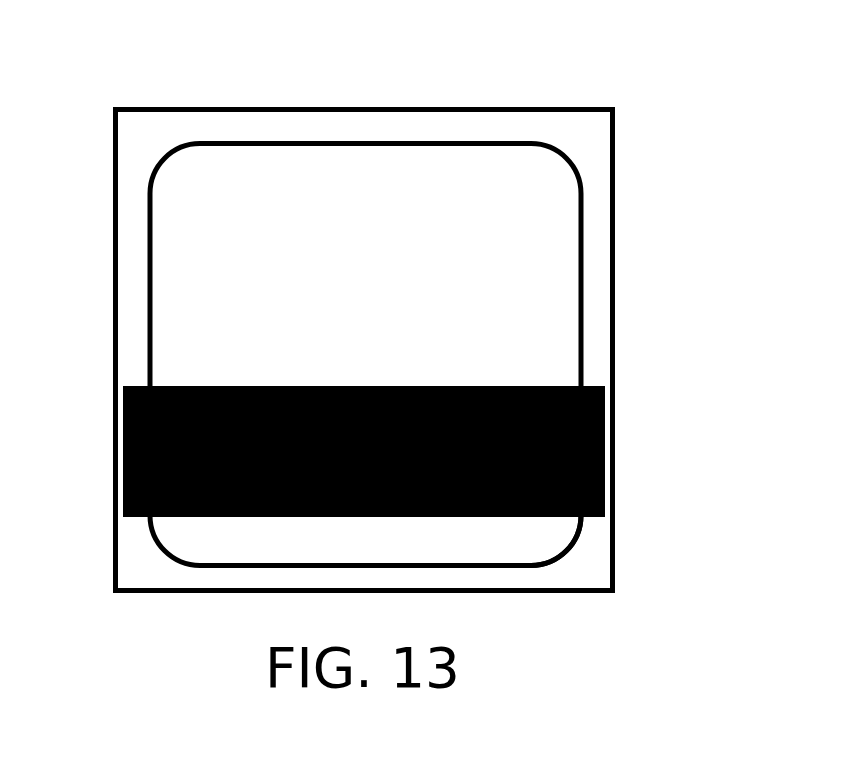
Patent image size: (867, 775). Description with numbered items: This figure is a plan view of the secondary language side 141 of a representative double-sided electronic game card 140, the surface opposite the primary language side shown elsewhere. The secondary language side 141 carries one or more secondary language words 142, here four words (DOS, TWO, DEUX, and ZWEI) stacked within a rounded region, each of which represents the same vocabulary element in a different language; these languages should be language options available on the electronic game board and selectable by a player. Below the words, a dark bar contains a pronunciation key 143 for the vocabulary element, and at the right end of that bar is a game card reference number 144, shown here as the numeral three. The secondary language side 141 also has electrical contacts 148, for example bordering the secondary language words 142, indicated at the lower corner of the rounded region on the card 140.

The double-sided electronic game card 140 is at (668, 284).
The secondary language side 141 is at (578, 143).
The secondary language words 142 is at (286, 231).
The pronunciation key 143 is at (290, 447).
The game card reference number 144 is at (575, 460).
The electrical contacts 148 is at (583, 553).